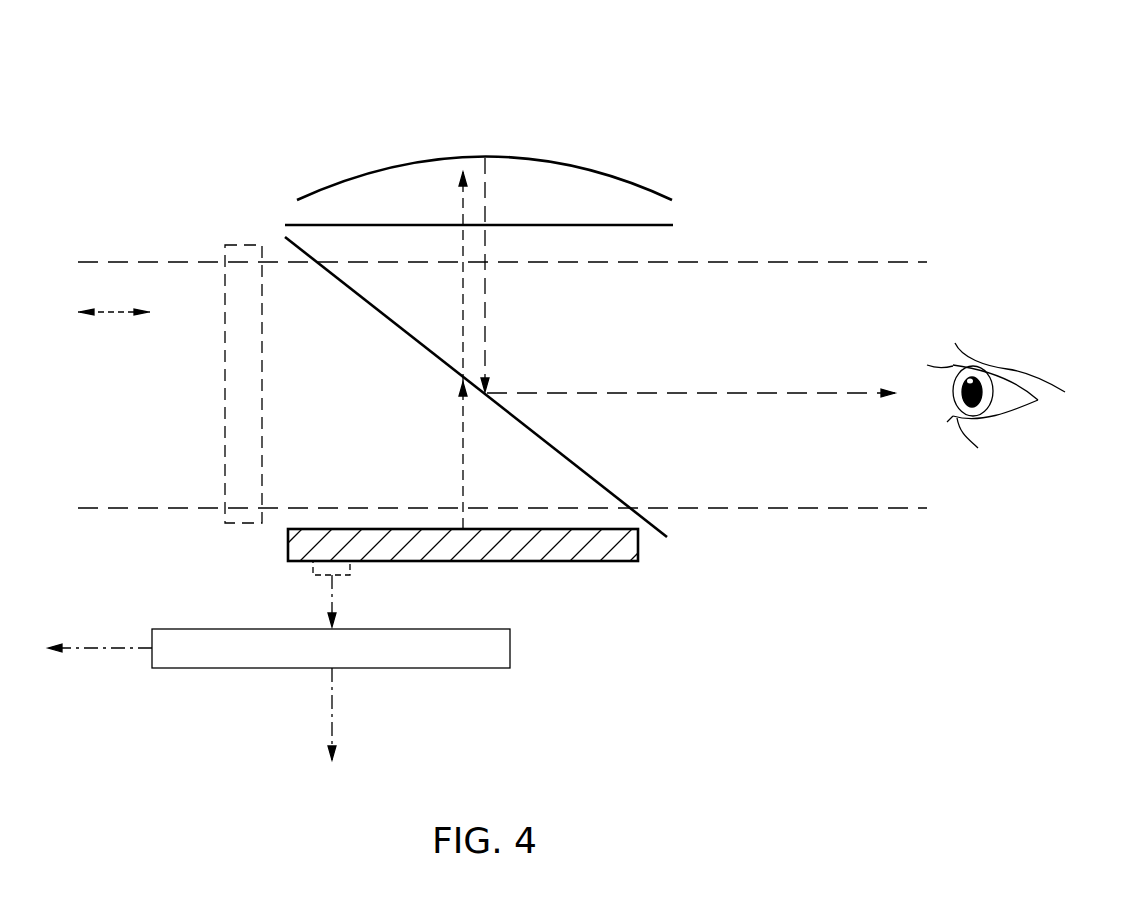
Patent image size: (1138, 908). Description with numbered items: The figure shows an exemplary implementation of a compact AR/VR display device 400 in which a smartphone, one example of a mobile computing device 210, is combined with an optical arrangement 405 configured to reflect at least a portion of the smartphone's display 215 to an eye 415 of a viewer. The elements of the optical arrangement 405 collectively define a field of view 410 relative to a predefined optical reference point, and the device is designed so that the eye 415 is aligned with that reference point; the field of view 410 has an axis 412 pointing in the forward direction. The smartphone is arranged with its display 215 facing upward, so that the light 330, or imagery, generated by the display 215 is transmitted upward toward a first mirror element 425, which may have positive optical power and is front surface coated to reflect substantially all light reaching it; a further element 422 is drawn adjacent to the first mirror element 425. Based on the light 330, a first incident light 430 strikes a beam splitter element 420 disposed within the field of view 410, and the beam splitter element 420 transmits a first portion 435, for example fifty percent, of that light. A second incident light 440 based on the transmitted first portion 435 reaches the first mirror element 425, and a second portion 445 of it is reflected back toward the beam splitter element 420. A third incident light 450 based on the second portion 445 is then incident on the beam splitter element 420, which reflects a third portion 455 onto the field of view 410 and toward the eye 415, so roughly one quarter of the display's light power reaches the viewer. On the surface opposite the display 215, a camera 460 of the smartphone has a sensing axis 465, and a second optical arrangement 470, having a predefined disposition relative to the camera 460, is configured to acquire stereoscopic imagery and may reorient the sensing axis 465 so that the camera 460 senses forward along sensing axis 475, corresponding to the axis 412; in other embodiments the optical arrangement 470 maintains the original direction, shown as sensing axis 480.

The compact AR/VR display device 400 is at (960, 110).
The optical arrangement 405 is at (708, 175).
The field of view 410 is at (843, 283).
The axis of the field of view 412 is at (115, 310).
The eye 415 is at (1012, 367).
The beam splitter element 420 is at (668, 535).
The optical element 422 is at (632, 226).
The first mirror element 425 is at (318, 190).
The first incident light 430 is at (460, 373).
The first portion 435 is at (460, 370).
The second incident light 440 is at (457, 190).
The second portion 445 is at (488, 160).
The third incident light 450 is at (487, 370).
The third portion 455 is at (520, 393).
The light 330 is at (462, 528).
The display 215 is at (408, 528).
The mobile computing device 210 is at (602, 562).
The camera 460 is at (312, 575).
The sensing axis 465 is at (332, 600).
The optical arrangement 470 is at (502, 661).
The sensing axis 475 is at (97, 648).
The sensing axis 480 is at (332, 708).